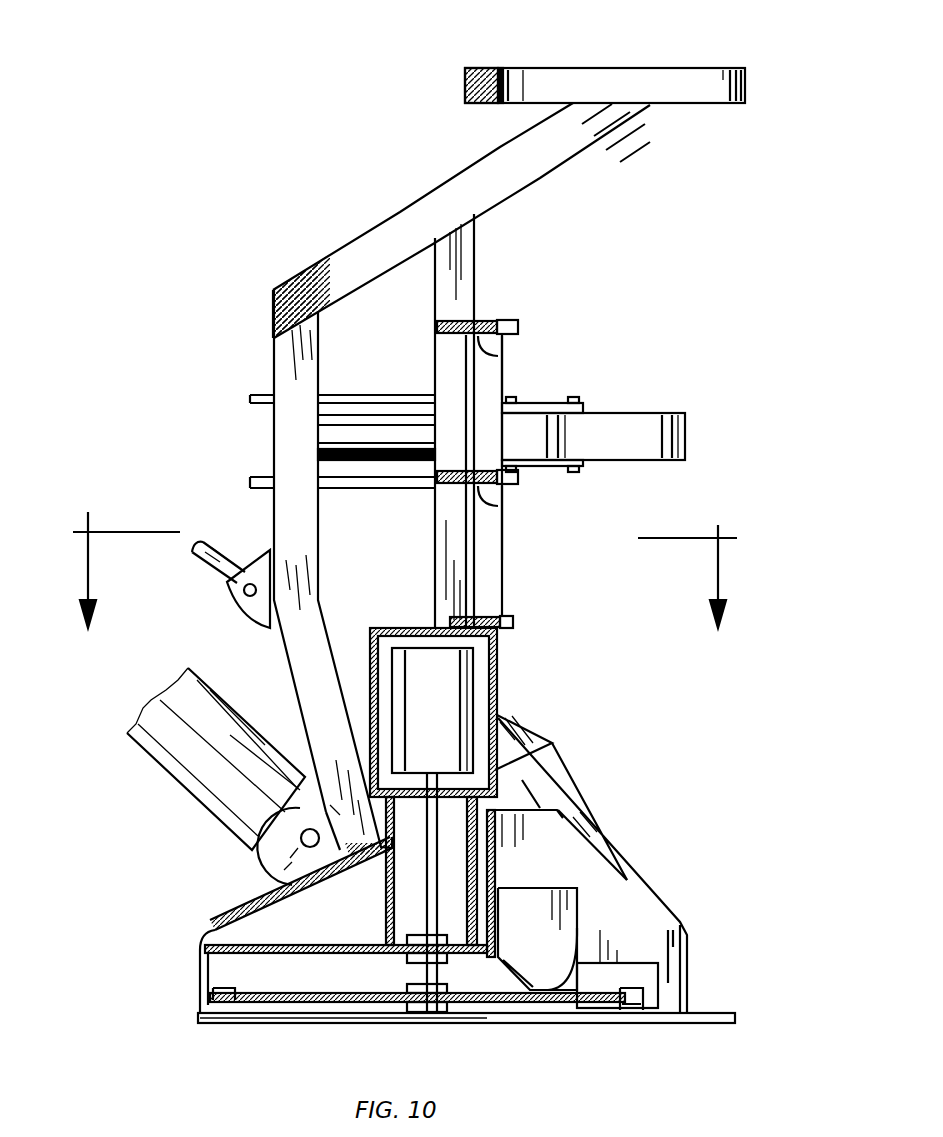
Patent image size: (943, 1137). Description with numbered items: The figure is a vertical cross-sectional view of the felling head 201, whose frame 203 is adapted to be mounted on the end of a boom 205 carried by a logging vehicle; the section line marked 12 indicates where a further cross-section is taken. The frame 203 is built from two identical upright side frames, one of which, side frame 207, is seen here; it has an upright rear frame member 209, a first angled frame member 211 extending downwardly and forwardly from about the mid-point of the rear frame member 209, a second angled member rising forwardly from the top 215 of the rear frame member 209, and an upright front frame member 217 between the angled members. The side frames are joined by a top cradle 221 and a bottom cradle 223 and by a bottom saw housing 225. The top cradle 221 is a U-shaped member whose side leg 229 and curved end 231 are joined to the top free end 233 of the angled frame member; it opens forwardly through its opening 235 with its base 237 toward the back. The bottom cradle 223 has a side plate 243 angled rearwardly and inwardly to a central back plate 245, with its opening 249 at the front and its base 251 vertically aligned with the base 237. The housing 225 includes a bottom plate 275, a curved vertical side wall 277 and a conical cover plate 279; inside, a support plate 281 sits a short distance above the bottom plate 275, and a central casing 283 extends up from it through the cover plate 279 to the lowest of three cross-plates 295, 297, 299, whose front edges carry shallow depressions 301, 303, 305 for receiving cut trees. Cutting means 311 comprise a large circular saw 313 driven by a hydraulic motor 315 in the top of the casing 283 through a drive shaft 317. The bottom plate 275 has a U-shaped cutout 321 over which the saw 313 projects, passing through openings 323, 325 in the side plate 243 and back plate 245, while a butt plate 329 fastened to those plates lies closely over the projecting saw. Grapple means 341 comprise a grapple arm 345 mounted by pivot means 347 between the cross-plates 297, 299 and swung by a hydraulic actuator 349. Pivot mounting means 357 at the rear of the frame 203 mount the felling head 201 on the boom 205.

The felling head 201 is at (374, 126).
The frame 203 is at (356, 233).
The boom 205 is at (163, 783).
The side frame 207 is at (432, 190).
The rear frame member 209 is at (273, 363).
The first angled frame member 211 is at (578, 790).
The top of the rear frame member 215 is at (277, 322).
The front frame member 217 is at (473, 277).
The top cradle 221 is at (756, 64).
The bottom cradle 223 is at (614, 842).
The saw housing 225 is at (200, 935).
The side leg 229 is at (648, 66).
The curved end 231 is at (465, 85).
The top free end 233 is at (636, 32).
The opening 235 is at (694, 91).
The base 237 is at (517, 30).
The side plate 243 is at (618, 903).
The back plate 245 is at (397, 907).
The opening 249 is at (643, 950).
The base 251 is at (493, 866).
The bottom plate 275 is at (385, 1023).
The side wall 277 is at (200, 982).
The cover plate 279 is at (245, 897).
The support plate 281 is at (232, 925).
The casing 283 is at (497, 690).
The cross-plate 295 is at (513, 617).
The cross-plate 297 is at (480, 492).
The cross-plate 299 is at (480, 340).
The depression 301 is at (513, 628).
The depression 303 is at (518, 484).
The depression 305 is at (508, 322).
The cutting means 311 is at (255, 1018).
The circular saw 313 is at (487, 1023).
The hydraulic motor 315 is at (477, 720).
The drive shaft 317 is at (552, 743).
The U-shaped cutout 321 is at (517, 1018).
The opening 323 is at (660, 993).
The opening 325 is at (417, 970).
The butt plate 329 is at (577, 960).
The grapple means 341 is at (666, 414).
The grapple arm 345 is at (650, 462).
The pivot means 347 is at (508, 403).
The hydraulic actuator 349 is at (390, 417).
The pivot mounting means 357 is at (286, 858).
The section line 12- 12 is at (404, 577).